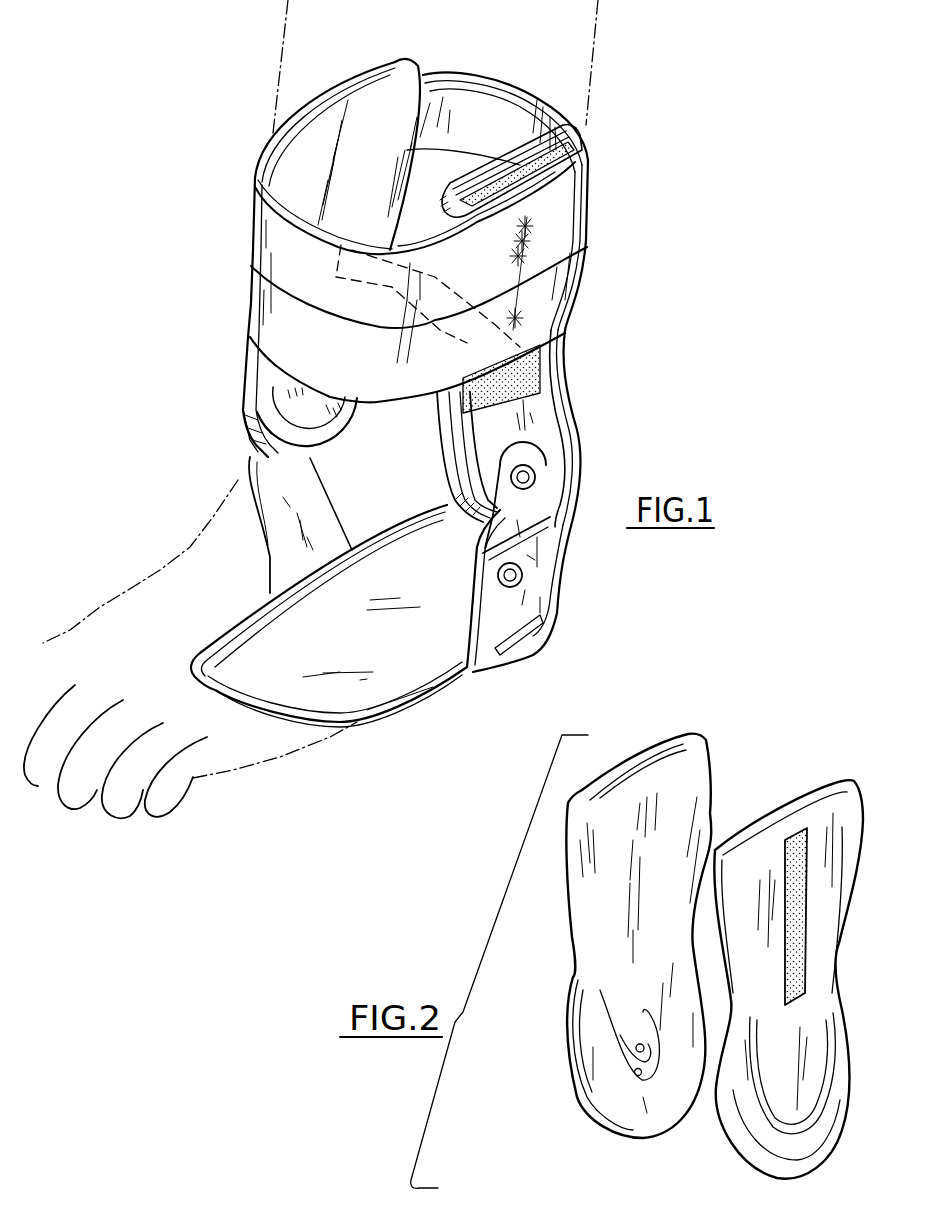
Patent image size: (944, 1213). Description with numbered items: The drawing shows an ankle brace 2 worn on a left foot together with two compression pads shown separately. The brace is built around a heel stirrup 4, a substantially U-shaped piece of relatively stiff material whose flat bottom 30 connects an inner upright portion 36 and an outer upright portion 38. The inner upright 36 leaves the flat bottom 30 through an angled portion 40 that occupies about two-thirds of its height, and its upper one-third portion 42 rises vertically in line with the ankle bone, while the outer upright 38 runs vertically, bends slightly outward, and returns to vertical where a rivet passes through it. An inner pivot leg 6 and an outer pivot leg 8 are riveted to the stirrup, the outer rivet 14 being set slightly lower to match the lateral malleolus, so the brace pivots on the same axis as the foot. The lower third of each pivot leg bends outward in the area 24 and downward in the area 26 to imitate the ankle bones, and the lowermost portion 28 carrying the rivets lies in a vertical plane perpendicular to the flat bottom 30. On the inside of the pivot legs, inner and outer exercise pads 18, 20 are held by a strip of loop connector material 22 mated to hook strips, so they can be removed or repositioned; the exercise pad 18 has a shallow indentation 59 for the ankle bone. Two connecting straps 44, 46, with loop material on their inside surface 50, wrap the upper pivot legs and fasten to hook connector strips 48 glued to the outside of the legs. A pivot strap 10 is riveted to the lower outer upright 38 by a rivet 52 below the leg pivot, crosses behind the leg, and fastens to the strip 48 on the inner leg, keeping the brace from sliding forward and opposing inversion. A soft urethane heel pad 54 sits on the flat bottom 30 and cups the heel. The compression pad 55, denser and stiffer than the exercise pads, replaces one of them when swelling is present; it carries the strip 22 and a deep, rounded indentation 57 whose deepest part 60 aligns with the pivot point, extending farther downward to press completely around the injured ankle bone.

In FIG. 1, the ankle brace 2 is at (630, 372).
In FIG. 1, the heel stirrup 4 is at (510, 648).
In FIG. 1, the inner pivot leg 6 is at (333, 84).
In FIG. 1, the outer pivot leg 8 is at (550, 392).
In FIG. 1, the pivot strap 10 is at (575, 428).
In FIG. 1, the outer rivet 14 is at (525, 477).
In FIG. 1, the inner exercise pad 18 is at (397, 58).
In FIG. 1, the outer exercise pad 20 is at (520, 135).
In FIG. 2, the strip of loop connector material 22 is at (804, 921).
In FIG. 1, the outward bending area 24 is at (470, 424).
In FIG. 1, the downward bending area 26 is at (470, 461).
In FIG. 1, the lowermost portion of the pivot legs 28 is at (477, 488).
In FIG. 1, the flat bottom 30 is at (452, 690).
In FIG. 1, the inner upright portion 36 is at (317, 493).
In FIG. 1, the outer upright portion 38 is at (470, 618).
In FIG. 1, the angled portion 40 is at (268, 570).
In FIG. 1, the upper one-third portion 42 is at (244, 452).
In FIG. 1, the connecting strap 44 is at (521, 315).
In FIG. 1, the connecting strap 46 is at (530, 240).
In FIG. 1, the hook connector strips 48 is at (580, 153).
In FIG. 1, the inside surface of the straps 50 is at (491, 83).
In FIG. 1, the rivet 52 is at (518, 576).
In FIG. 1, the heel pad 54 is at (323, 673).
In FIG. 2, the compression pad 55 is at (806, 795).
In FIG. 2, the indentation 57 is at (637, 1073).
In FIG. 1, the indentation 59 is at (311, 432).
In FIG. 2, the deepest part of the indentation 60 is at (640, 1047).